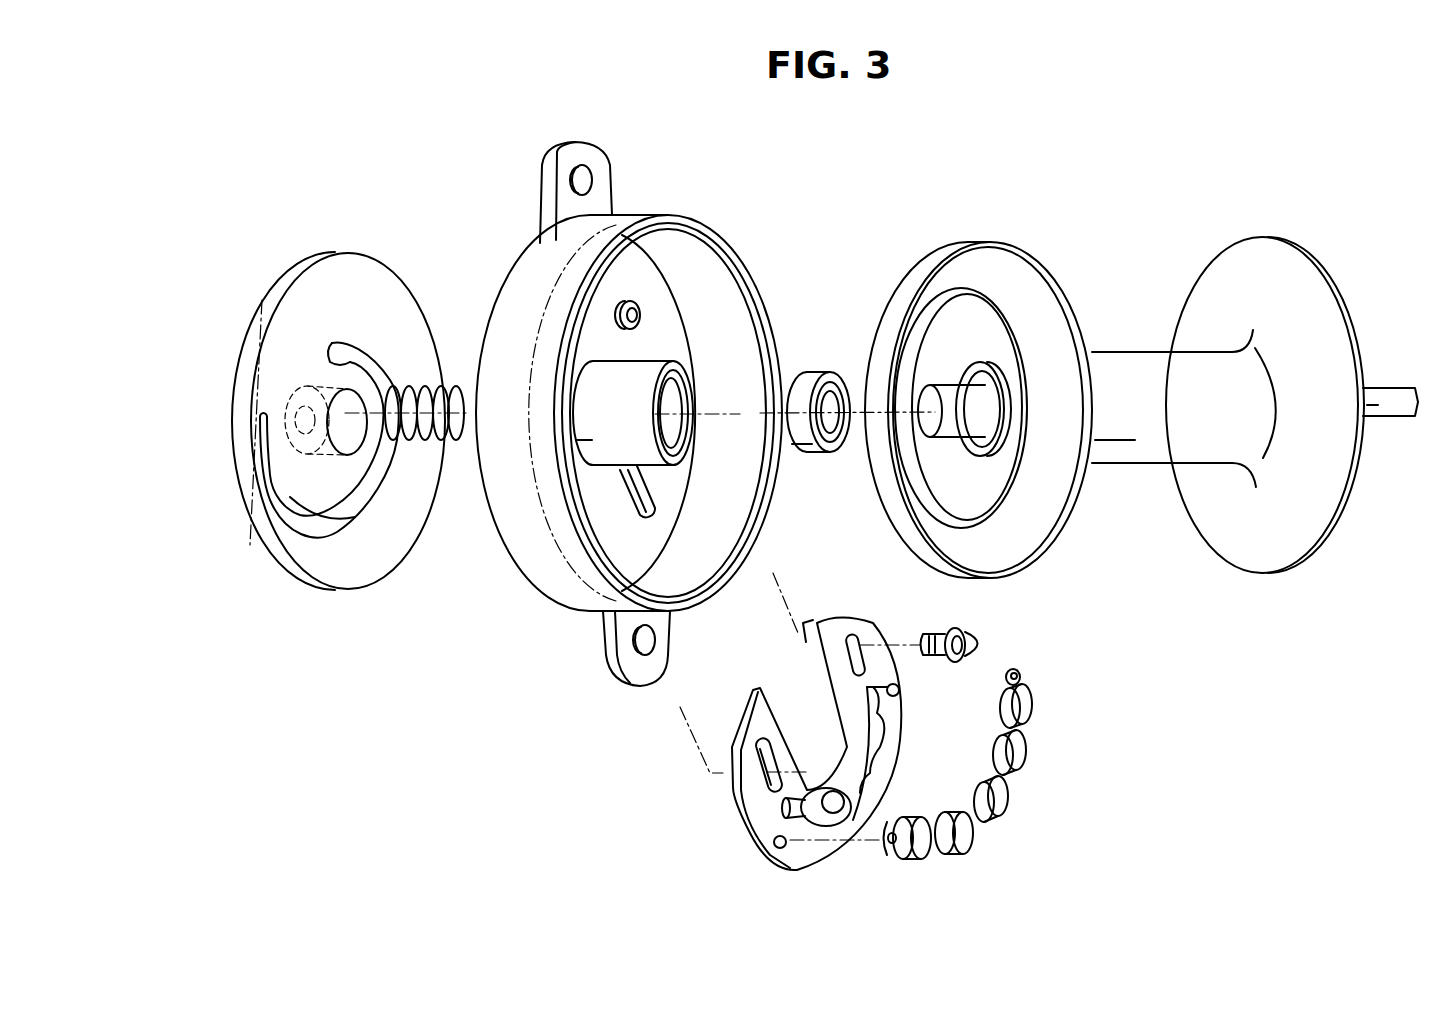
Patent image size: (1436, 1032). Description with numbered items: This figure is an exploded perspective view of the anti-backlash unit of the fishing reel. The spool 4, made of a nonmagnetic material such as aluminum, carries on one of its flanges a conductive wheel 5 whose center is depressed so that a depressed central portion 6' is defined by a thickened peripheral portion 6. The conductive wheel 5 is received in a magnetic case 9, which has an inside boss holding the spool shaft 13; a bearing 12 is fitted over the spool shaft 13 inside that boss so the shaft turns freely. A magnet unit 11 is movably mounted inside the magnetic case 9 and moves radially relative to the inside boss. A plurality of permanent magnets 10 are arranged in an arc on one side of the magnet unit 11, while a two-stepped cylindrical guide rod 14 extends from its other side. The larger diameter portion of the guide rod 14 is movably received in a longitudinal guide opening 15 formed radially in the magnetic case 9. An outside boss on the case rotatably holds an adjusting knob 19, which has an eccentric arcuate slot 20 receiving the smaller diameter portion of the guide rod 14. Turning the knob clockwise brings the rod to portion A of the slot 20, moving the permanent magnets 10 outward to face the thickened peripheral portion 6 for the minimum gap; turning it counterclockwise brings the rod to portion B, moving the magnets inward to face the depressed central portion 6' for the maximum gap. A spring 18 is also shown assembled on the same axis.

The spool 4 is at (1121, 350).
The conductive wheel 5 is at (1030, 245).
The thickened peripheral portion 6 is at (961, 360).
The depressed central portion 6' is at (945, 373).
The magnetic case 9 is at (545, 600).
The permanent magnets 10 is at (1000, 803).
The magnet unit 11 is at (757, 857).
The bearing 12 is at (818, 373).
The spool shaft 13 is at (923, 427).
The two-stepped cylindrical guide rod 14 is at (800, 792).
The longitudinal guide opening 15 is at (657, 503).
The spring 18 is at (443, 462).
The adjusting knob 19 is at (238, 328).
The eccentric arcuate slot 20 is at (355, 520).
The portion A of the eccentric arcuate slot A is at (260, 414).
The portion B of the eccentric arcuate slot B is at (333, 347).